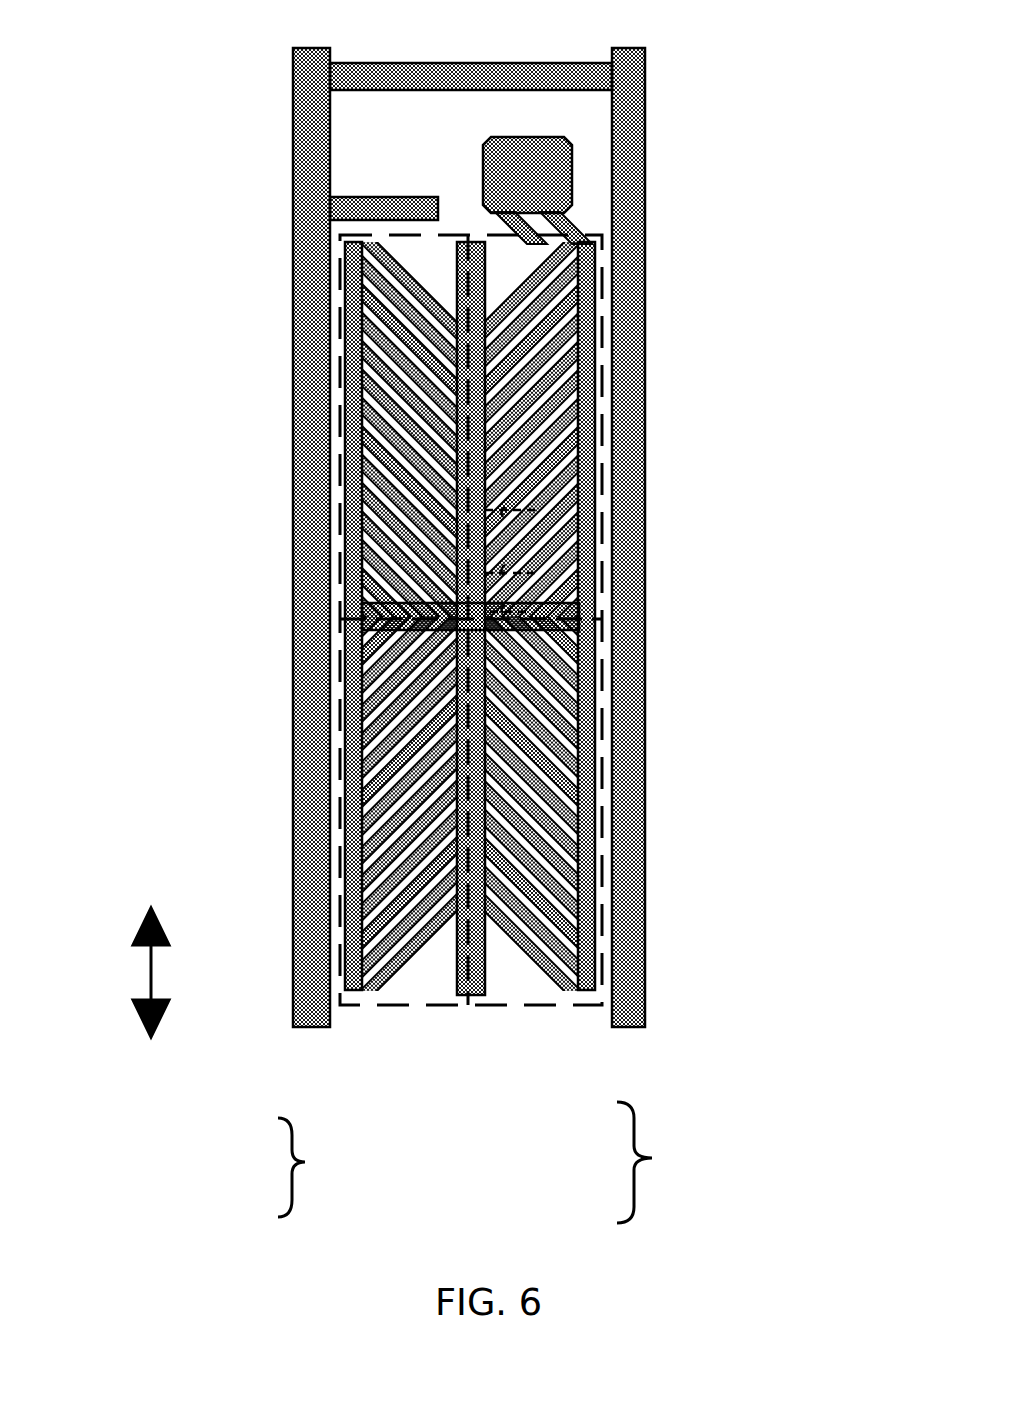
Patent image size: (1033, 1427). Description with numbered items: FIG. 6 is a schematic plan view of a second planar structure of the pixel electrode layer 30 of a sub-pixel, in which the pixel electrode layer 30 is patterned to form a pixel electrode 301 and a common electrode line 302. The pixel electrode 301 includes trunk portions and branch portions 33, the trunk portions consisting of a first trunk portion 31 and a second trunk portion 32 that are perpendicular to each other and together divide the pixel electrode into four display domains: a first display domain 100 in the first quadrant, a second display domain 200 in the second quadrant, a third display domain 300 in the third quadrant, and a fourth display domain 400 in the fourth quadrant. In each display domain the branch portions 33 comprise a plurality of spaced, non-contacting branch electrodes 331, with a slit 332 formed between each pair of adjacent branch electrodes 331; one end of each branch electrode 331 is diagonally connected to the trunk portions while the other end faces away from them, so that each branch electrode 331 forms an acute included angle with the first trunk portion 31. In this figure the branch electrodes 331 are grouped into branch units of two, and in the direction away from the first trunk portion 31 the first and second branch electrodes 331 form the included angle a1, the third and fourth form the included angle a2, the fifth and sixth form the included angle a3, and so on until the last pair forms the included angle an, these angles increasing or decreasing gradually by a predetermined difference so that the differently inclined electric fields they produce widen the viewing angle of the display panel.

The pixel electrode layer 30 is at (200, 41).
The common electrode line 302 is at (305, 267).
The first display domain 100 is at (603, 378).
The second display domain 200 is at (340, 385).
The third display domain 300 is at (338, 827).
The fourth display domain 400 is at (603, 830).
The pixel electrode 301 is at (650, 1158).
The first trunk portion 31 is at (395, 612).
The second trunk portion 32 is at (473, 898).
The branch portions 33 is at (284, 1165).
The branch electrode 331 is at (533, 743).
The slit 332 is at (530, 663).
The included angle an is at (500, 256).
The included angle a1 is at (505, 605).
The included angle a2 is at (505, 565).
The included angle a3 is at (505, 507).